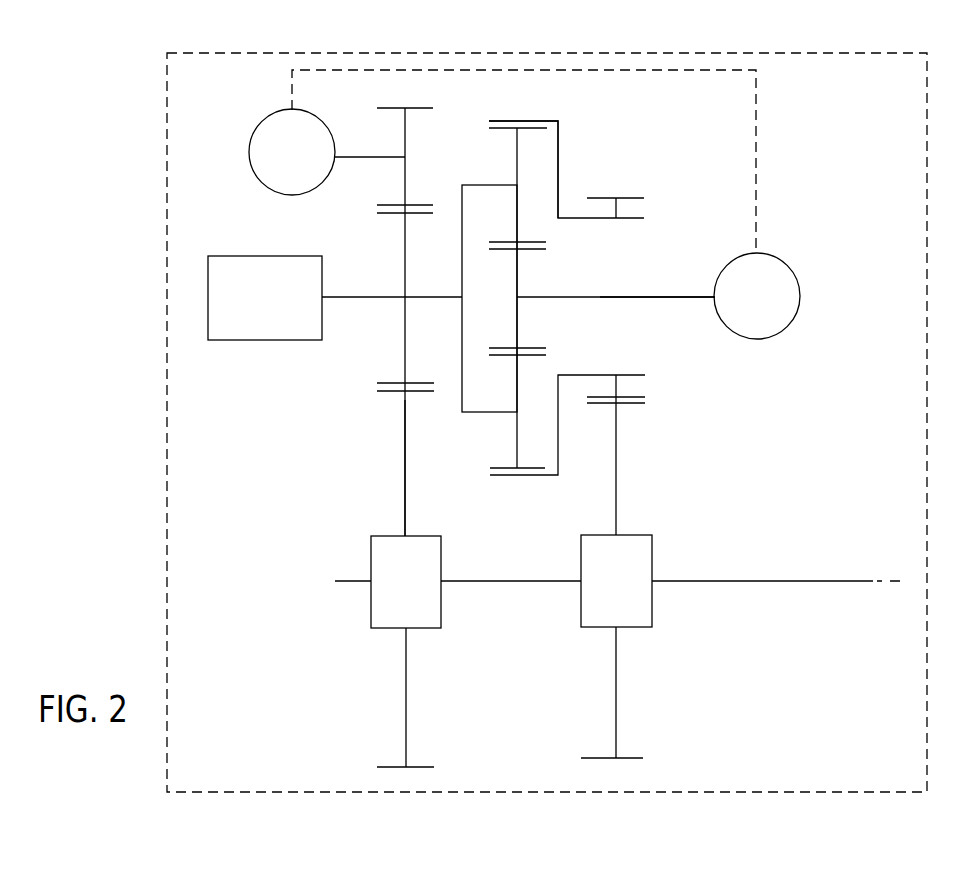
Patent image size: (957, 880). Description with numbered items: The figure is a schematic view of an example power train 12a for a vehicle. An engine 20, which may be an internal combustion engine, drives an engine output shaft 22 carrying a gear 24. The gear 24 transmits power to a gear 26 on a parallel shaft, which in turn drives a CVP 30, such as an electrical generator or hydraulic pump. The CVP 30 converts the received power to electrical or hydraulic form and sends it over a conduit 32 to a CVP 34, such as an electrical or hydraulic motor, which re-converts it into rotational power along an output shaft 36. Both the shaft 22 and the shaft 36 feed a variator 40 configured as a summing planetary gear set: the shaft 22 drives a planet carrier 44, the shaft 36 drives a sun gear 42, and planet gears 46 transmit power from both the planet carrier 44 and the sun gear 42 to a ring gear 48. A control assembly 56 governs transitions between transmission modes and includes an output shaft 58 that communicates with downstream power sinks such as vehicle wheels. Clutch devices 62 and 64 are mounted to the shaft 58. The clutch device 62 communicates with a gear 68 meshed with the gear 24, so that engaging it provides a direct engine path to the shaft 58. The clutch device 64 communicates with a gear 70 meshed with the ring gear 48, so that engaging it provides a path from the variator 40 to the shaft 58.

The power train 12a is at (547, 422).
The engine 20 is at (277, 256).
The engine output shaft 22 is at (390, 298).
The gear 24 is at (405, 350).
The gear 26 is at (405, 182).
The CVP 30 is at (288, 110).
The conduit 32 is at (756, 137).
The CVP 34 is at (775, 253).
The output shaft 36 is at (657, 297).
The variator 40 is at (615, 172).
The sun gear 42 is at (517, 323).
The planet carrier 44 is at (477, 185).
The planet gears 46 is at (517, 217).
The ring gear 48 is at (562, 167).
The control assembly 56 is at (747, 450).
The output shaft 58 is at (722, 581).
The clutch device 62 is at (371, 550).
The clutch device 64 is at (652, 557).
The gear 68 is at (405, 442).
The gear 70 is at (616, 478).